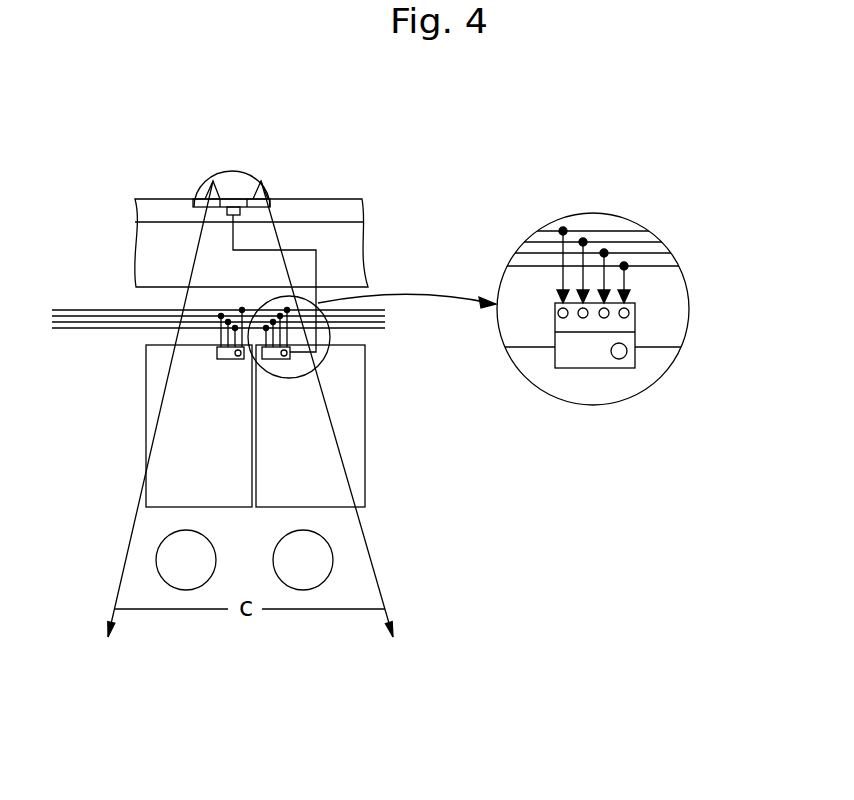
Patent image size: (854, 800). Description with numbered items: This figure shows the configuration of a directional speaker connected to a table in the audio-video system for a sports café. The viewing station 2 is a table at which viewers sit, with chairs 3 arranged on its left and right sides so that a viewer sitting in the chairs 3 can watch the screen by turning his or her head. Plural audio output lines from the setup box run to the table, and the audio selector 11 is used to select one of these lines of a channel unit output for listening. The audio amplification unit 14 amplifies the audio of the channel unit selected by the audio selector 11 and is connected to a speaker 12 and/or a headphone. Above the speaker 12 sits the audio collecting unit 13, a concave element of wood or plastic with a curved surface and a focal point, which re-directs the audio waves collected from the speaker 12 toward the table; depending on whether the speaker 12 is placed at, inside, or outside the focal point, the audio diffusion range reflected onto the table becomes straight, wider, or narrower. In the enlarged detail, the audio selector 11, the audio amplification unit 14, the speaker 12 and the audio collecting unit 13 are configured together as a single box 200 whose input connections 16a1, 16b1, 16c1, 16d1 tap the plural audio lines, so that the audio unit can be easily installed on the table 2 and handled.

The audio collecting unit 13 is at (250, 177).
The speaker 12 is at (248, 202).
The chairs 3 is at (348, 254).
The viewing station 2 is at (182, 447).
The single box 200 is at (227, 359).
The audio selector 11 is at (623, 325).
The audio amplification unit 14 is at (582, 357).
The terminal pin 16a1 is at (627, 306).
The terminal pin 16b1 is at (607, 308).
The terminal pin 16c1 is at (583, 319).
The terminal pin 16d1 is at (556, 314).